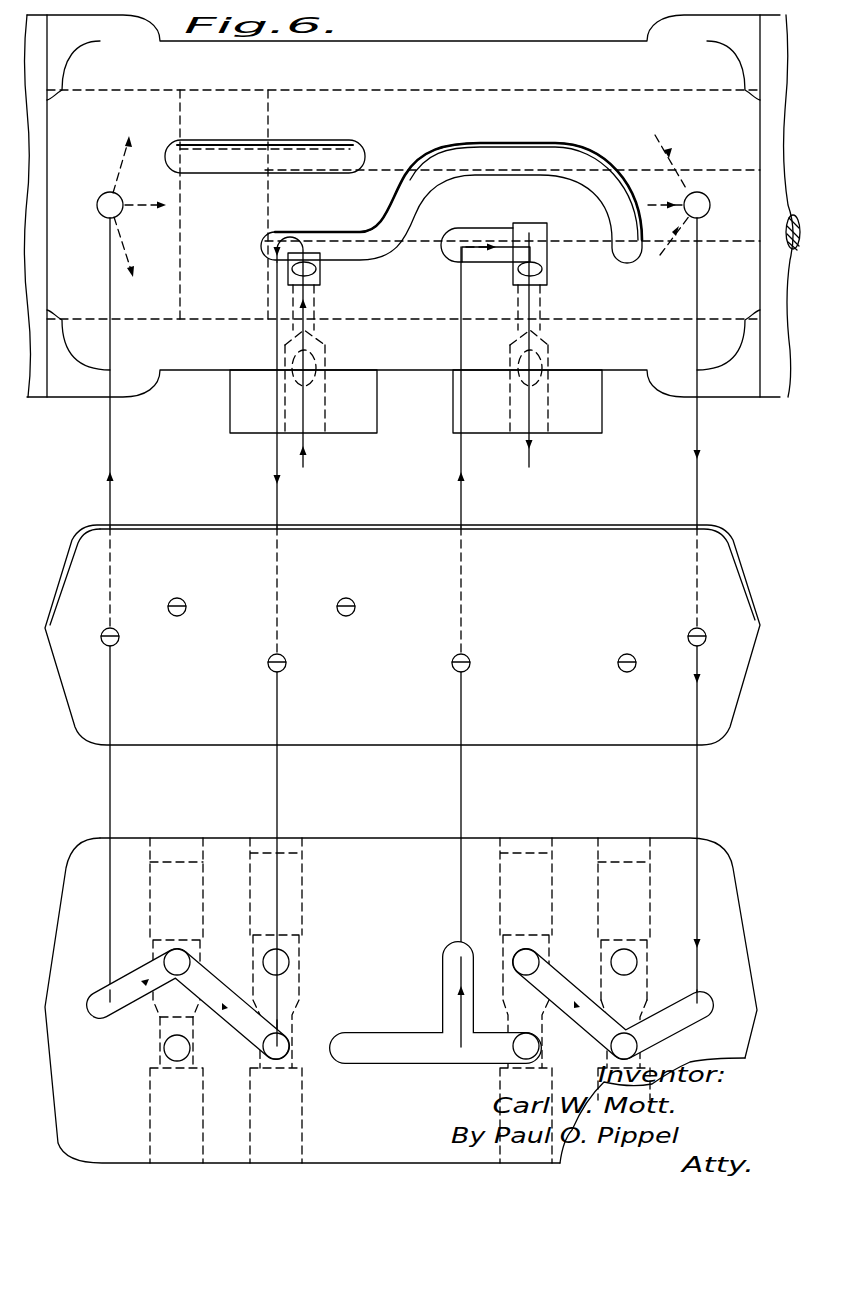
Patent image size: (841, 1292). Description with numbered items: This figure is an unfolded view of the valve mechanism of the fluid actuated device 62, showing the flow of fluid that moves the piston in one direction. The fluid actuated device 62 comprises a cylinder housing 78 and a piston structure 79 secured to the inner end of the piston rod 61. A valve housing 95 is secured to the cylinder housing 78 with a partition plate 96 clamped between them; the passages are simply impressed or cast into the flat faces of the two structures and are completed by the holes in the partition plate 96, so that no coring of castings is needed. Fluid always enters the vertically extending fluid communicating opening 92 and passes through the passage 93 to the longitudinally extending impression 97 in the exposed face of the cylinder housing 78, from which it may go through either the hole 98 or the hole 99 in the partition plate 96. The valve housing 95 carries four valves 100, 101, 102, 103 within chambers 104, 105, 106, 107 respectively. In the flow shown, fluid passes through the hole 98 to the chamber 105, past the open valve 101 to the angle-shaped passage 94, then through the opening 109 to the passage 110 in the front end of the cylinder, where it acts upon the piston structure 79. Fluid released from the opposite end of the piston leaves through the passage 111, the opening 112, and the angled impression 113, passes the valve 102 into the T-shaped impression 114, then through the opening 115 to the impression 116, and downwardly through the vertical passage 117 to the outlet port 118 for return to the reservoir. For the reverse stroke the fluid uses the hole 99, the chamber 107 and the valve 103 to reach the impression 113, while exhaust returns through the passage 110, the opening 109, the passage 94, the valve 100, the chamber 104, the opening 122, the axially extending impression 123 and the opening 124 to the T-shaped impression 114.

The piston rod 61 is at (790, 178).
The fluid actuated device 62 is at (538, 44).
The cylinder housing 78 is at (192, 366).
The piston structure 79 is at (221, 120).
The fluid communicating opening 92 is at (318, 420).
The passage 93 is at (318, 328).
The angle-shaped passage 94 is at (115, 1018).
The valve housing 95 is at (70, 862).
The partition plate 96 is at (72, 546).
The longitudinally extending cavity or impression 97 is at (373, 232).
The hole 98 is at (284, 670).
The hole 99 is at (620, 669).
The valve 100 is at (163, 1007).
The valve 101 is at (300, 992).
The valve 102 is at (503, 973).
The valve 103 is at (650, 960).
The chamber 104 is at (157, 927).
The chamber 105 is at (298, 908).
The chamber 106 is at (500, 910).
The chamber 107 is at (640, 900).
The opening 109 is at (118, 642).
The passage 110 is at (98, 204).
The passage 111 is at (710, 208).
The opening 112 is at (690, 630).
The angled impression 113 is at (670, 1030).
The T-shaped impression 114 is at (442, 1058).
The opening 115 is at (453, 661).
The impression 116 is at (479, 232).
The vertical passage 117 is at (538, 302).
The outlet port 118 is at (541, 422).
The opening 122 is at (181, 601).
The axially extending impression 123 is at (297, 150).
The opening 124 is at (354, 601).